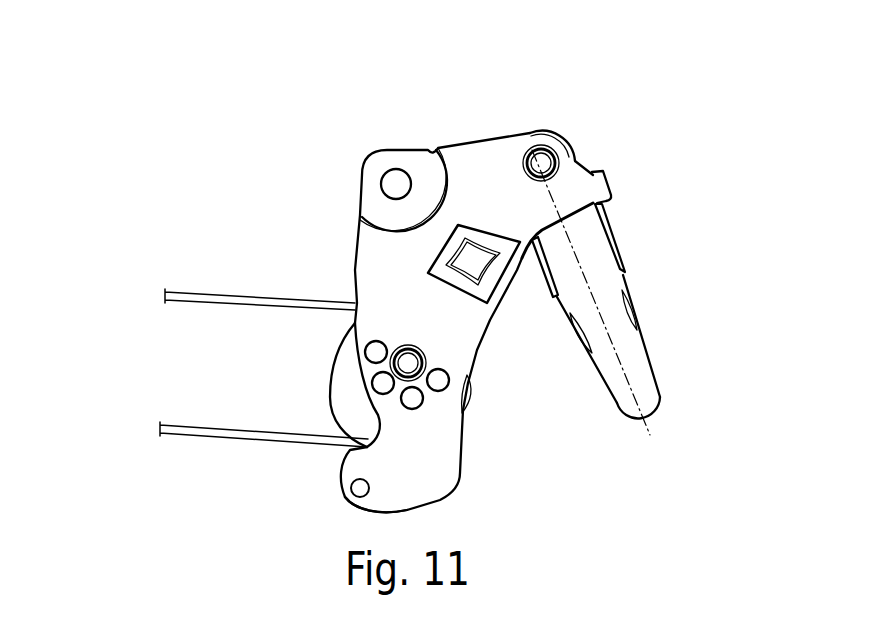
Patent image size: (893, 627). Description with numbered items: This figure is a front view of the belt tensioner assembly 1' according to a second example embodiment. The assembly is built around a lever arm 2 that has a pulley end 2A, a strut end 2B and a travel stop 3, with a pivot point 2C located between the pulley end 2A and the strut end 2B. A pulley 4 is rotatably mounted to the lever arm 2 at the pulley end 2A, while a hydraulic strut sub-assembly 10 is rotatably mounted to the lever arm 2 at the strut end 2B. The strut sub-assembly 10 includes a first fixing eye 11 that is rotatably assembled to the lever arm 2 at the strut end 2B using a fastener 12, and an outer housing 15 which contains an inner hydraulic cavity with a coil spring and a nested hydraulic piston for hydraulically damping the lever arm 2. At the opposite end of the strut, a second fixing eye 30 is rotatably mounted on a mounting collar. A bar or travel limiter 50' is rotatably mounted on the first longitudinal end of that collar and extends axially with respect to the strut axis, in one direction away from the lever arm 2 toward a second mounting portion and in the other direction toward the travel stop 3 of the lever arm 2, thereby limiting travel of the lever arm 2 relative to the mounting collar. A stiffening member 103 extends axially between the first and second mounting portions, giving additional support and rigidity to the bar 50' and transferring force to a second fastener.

The belt tensioner assembly 1' is at (469, 279).
The lever arm 2 is at (470, 152).
The pulley end 2A is at (423, 457).
The strut end 2B is at (565, 175).
The pivot point 2C is at (396, 184).
The travel stop 3 is at (563, 217).
The pulley 4 is at (471, 392).
The hydraulic strut sub-assembly 10 is at (605, 179).
The first fixing eye 11 is at (549, 131).
The fastener 12 is at (539, 158).
The outer housing 15 is at (621, 248).
The second fixing eye 30 is at (637, 319).
The bar or travel limiter 50' is at (611, 441).
The stiffening member 103 is at (637, 368).